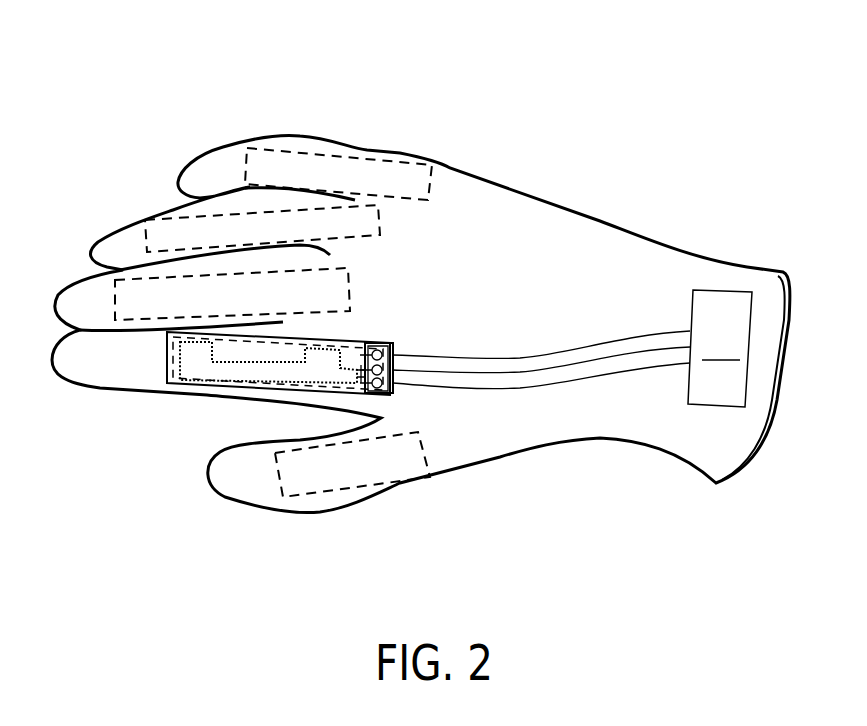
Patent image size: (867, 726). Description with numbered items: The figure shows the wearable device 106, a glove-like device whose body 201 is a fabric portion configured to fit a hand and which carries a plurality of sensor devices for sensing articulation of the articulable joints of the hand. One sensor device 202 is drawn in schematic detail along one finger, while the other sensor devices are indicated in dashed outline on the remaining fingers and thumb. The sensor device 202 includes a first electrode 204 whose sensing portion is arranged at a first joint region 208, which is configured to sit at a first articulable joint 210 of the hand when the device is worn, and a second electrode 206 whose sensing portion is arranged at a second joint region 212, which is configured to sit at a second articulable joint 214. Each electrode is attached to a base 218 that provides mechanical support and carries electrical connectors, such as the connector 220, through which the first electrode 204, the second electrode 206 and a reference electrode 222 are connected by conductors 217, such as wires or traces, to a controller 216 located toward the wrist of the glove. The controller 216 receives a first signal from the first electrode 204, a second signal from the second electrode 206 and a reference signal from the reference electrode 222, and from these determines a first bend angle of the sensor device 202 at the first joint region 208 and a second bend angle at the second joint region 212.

The wearable device 106 is at (422, 62).
The body 201 is at (477, 198).
The sensor device 202 is at (478, 309).
The first electrode 204 is at (191, 352).
The second electrode 206 is at (318, 360).
The first joint region 208 is at (165, 356).
The first articulable joint 210 is at (196, 401).
The second joint region 212 is at (334, 336).
The second articulable joint 214 is at (330, 412).
The controller 216 is at (720, 348).
The conductors 217 is at (514, 390).
The base 218 is at (382, 343).
The connector 220 is at (380, 394).
The reference electrode 222 is at (263, 385).